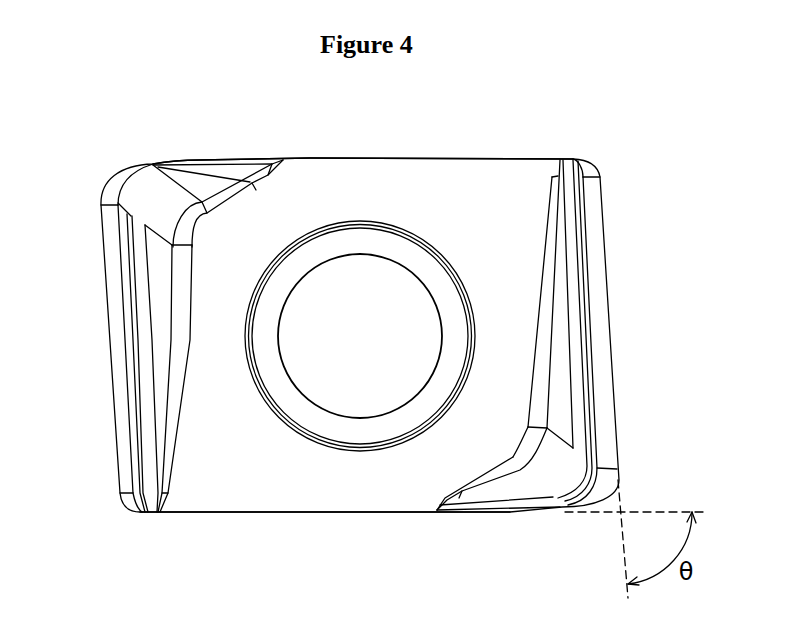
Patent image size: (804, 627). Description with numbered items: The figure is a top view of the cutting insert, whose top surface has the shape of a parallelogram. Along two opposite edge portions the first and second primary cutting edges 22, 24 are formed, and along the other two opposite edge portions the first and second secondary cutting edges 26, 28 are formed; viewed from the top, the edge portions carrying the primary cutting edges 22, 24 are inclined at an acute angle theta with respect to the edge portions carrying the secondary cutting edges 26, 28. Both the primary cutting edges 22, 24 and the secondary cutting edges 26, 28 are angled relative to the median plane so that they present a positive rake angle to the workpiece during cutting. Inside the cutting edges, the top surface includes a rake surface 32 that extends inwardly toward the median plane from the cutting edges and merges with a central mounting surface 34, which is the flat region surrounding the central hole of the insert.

The first primary cutting edge 22 is at (106, 296).
The second primary cutting edge 24 is at (606, 278).
The first secondary cutting edge 26 is at (236, 160).
The second secondary cutting edge 28 is at (486, 514).
The rake surface 32 is at (135, 185).
The mounting surface 34 is at (463, 190).